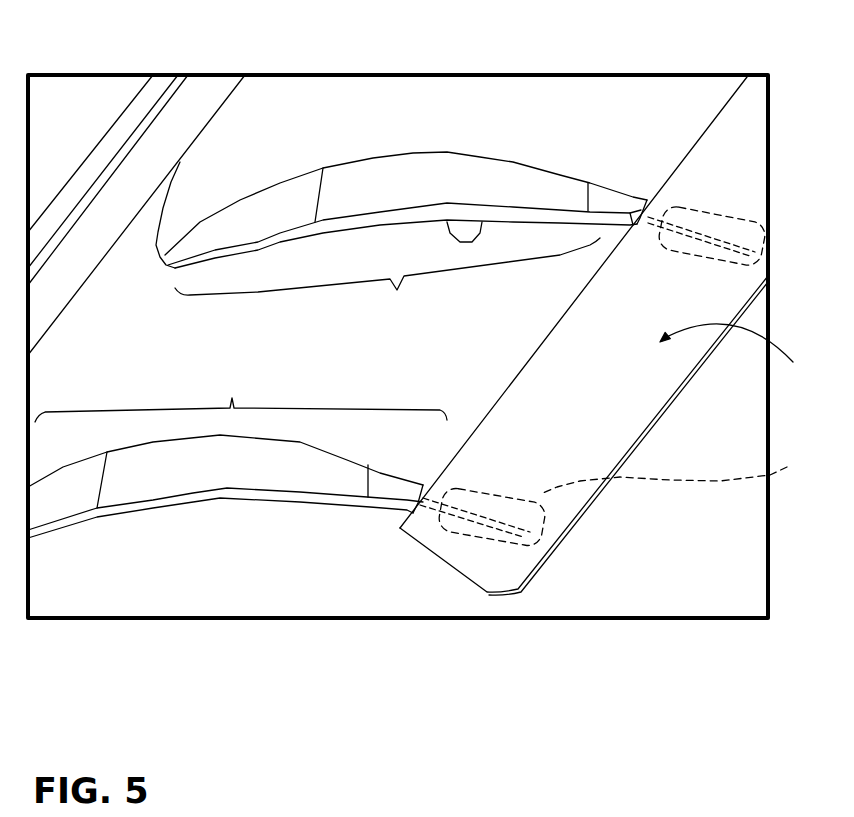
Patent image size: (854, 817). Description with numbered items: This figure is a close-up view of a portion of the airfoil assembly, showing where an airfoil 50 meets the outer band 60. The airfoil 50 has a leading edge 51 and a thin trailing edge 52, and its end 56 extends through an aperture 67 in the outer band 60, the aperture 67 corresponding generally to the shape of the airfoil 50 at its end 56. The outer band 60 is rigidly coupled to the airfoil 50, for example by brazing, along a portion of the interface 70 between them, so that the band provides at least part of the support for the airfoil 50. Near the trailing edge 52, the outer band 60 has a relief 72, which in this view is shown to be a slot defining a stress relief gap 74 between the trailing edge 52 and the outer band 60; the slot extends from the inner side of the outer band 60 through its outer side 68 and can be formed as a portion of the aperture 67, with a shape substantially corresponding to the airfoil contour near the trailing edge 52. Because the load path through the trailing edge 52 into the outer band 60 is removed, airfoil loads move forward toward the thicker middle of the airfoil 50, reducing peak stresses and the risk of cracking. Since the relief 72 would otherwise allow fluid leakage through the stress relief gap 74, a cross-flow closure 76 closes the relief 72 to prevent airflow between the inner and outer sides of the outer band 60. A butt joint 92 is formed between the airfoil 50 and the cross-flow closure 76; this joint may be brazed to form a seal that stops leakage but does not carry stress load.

The airfoil 50 is at (337, 345).
The leading edge 51 is at (190, 141).
The trailing edge 52 is at (604, 341).
The end 56 is at (404, 143).
The outer band 60 is at (241, 612).
The aperture 67 is at (489, 126).
The outer side 68 is at (76, 622).
The interface 70 is at (317, 330).
The relief 72 is at (584, 372).
The stress relief gap 74 is at (674, 466).
The cross-flow closure 76 is at (734, 355).
The butt joint 92 is at (633, 130).